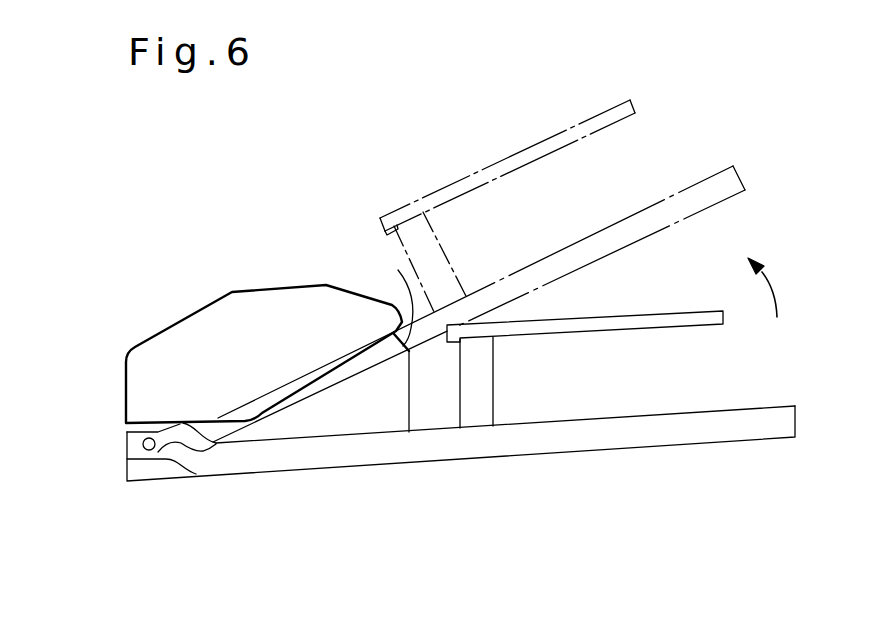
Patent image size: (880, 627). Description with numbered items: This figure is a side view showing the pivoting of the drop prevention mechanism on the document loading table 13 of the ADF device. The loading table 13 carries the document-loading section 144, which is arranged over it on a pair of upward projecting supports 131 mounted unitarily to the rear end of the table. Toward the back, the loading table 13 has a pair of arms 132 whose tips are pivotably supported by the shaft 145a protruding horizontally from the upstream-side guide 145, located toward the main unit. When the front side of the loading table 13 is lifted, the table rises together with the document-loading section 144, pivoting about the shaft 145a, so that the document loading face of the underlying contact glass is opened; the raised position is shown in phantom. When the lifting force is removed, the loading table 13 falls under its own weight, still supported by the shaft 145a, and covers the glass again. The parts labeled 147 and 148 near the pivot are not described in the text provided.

The document loading table 13 is at (622, 230).
The upward projecting supports 131 is at (478, 382).
The arms 132 is at (307, 455).
The document-loading section 144 is at (613, 313).
The upstream-side guide 145 is at (150, 472).
The shaft 145a is at (143, 440).
The hinge bracket 147 is at (398, 270).
The cover 148 is at (252, 307).